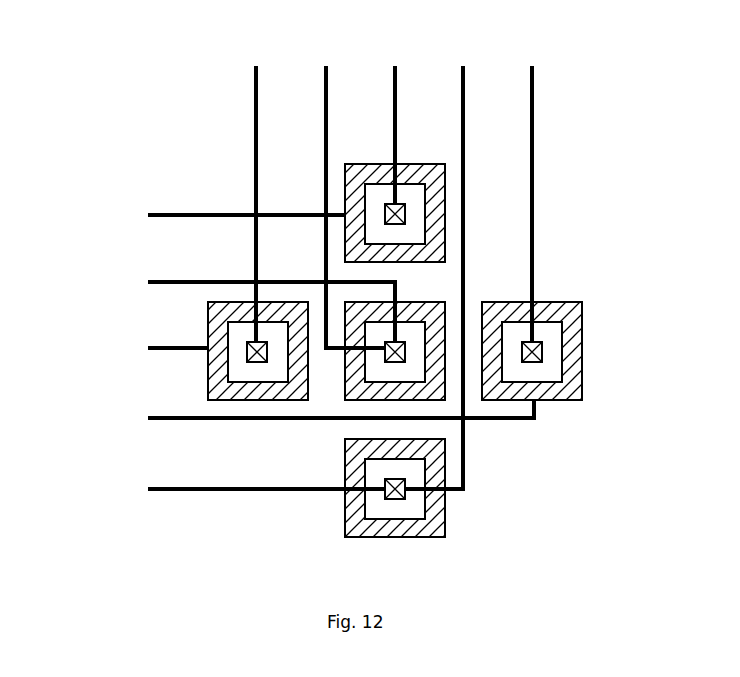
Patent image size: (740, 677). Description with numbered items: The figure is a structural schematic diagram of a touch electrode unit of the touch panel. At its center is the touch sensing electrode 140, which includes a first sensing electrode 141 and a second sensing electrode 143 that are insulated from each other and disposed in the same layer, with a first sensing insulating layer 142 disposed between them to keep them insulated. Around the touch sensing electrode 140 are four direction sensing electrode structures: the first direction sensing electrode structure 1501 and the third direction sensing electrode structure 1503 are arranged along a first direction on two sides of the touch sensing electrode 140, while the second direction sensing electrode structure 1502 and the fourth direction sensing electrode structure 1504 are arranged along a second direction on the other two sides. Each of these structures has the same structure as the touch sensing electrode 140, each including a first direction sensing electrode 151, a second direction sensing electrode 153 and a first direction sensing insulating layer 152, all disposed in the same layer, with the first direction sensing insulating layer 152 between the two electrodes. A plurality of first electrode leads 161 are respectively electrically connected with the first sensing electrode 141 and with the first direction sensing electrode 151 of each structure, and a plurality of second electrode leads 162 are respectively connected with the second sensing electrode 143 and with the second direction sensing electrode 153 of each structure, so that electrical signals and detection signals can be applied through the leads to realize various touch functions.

The first electrode lead 161 is at (258, 80).
The second electrode lead 162 is at (200, 215).
The first direction sensing electrode 151 is at (247, 344).
The first direction sensing insulating layer 152 is at (253, 370).
The second direction sensing electrode 153 is at (210, 305).
The first direction sensing electrode structure 1501 is at (208, 372).
The second direction sensing electrode structure 1502 is at (447, 218).
The third direction sensing electrode structure 1503 is at (583, 349).
The fourth direction sensing electrode structure 1504 is at (446, 506).
The touch sensing electrode 140 is at (443, 300).
The first sensing electrode 141 is at (405, 342).
The first sensing insulating layer 142 is at (417, 372).
The second sensing electrode 143 is at (433, 350).